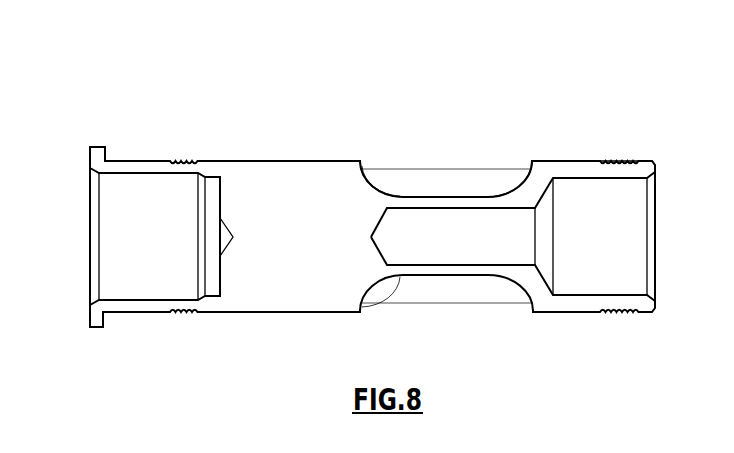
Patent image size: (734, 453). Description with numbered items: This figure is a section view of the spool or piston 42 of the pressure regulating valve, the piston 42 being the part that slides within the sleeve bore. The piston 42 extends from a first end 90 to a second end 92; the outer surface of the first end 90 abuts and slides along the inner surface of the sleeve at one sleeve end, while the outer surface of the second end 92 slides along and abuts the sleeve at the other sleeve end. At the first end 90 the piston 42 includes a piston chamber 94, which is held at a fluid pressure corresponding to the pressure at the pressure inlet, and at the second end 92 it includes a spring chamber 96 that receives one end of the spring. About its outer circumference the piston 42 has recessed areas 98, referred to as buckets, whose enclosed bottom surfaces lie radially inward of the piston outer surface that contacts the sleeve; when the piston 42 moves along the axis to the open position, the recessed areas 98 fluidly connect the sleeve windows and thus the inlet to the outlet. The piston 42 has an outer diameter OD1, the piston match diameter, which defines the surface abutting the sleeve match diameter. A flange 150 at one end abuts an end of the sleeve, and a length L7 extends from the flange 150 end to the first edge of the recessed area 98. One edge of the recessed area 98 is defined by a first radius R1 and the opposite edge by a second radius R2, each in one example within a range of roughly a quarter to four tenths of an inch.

The piston 42 is at (612, 113).
The first end 90 is at (640, 167).
The second end 92 is at (122, 168).
The piston chamber 94 is at (633, 272).
The spring chamber 96 is at (124, 272).
The recessed areas 98 is at (455, 197).
The flange 150 is at (99, 155).
The first radius R1 is at (383, 173).
The second radius R2 is at (508, 173).
The outer diameter OD1 is at (283, 176).
The length L7 is at (346, 346).